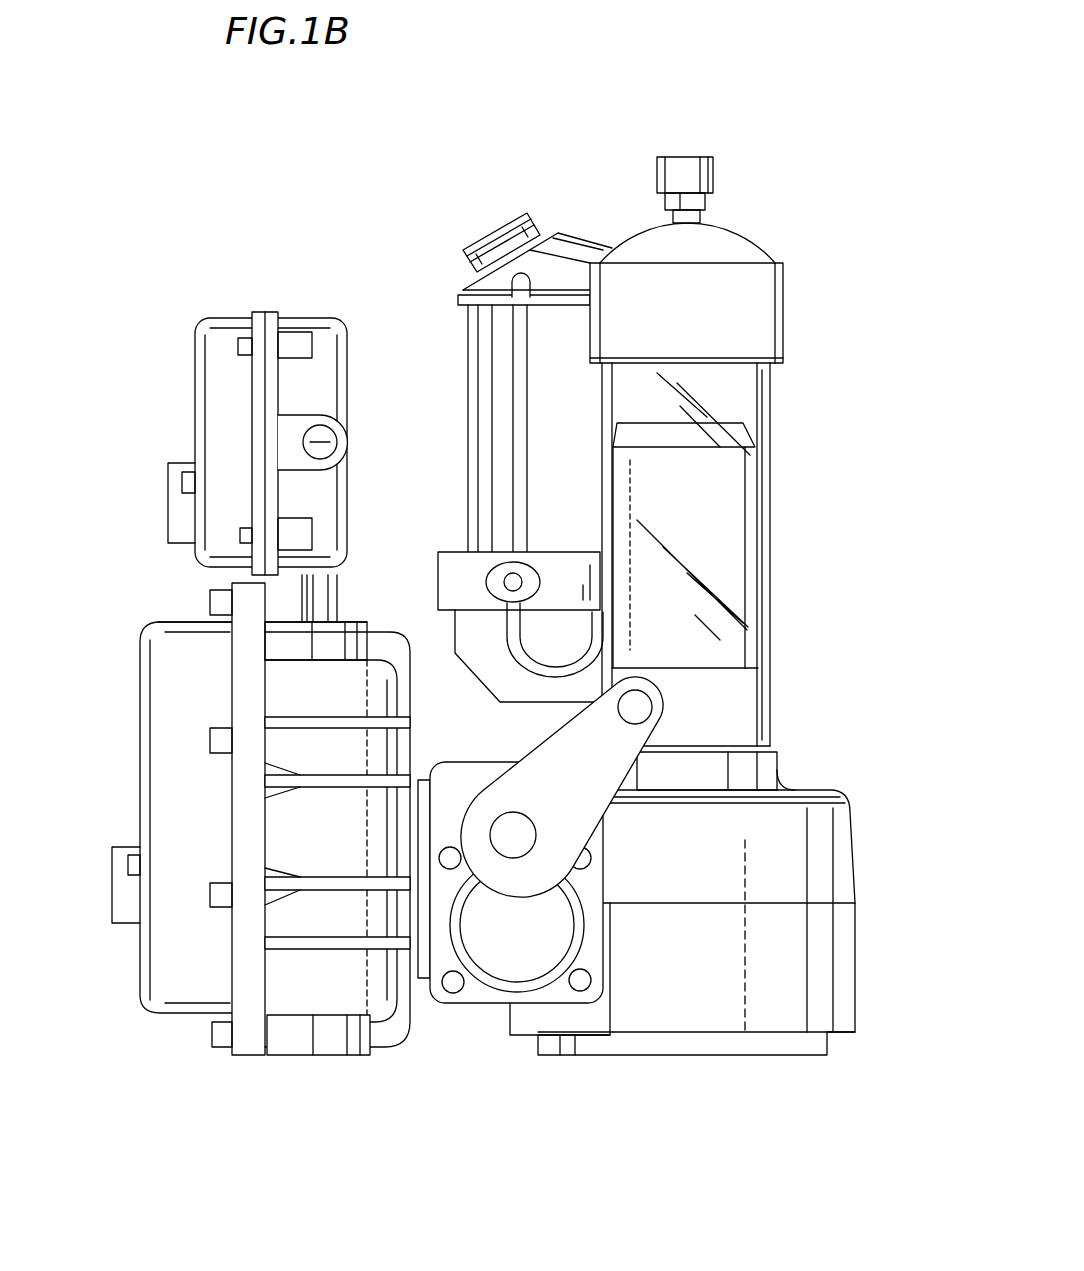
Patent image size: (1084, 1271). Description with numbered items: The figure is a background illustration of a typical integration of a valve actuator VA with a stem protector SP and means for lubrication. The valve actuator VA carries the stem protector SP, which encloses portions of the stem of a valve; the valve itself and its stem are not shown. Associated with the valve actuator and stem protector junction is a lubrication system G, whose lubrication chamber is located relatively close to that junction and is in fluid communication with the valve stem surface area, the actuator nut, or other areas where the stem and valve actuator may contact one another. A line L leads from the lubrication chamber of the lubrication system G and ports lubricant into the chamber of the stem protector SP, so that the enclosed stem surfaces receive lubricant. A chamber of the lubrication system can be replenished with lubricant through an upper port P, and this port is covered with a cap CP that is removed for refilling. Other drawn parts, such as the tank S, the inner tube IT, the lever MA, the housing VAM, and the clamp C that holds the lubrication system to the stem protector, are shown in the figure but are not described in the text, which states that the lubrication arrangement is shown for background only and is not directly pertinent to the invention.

The lubrication system G is at (497, 329).
The cap CP is at (510, 223).
The upper port P is at (470, 278).
The sight tank S is at (727, 473).
The stem protector SP is at (787, 505).
The inner tube IT is at (758, 562).
The manual actuator lever MA is at (660, 725).
The valve actuator module housing VAM is at (888, 915).
The clamp C is at (455, 645).
The line L is at (528, 660).
The valve actuator VA is at (140, 600).